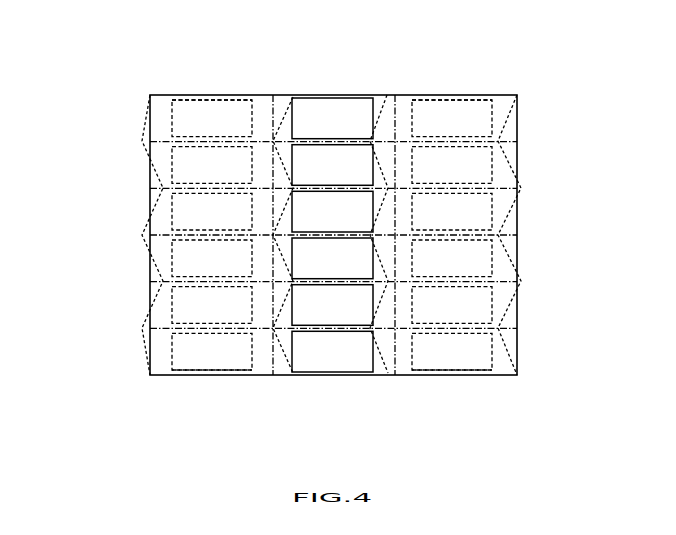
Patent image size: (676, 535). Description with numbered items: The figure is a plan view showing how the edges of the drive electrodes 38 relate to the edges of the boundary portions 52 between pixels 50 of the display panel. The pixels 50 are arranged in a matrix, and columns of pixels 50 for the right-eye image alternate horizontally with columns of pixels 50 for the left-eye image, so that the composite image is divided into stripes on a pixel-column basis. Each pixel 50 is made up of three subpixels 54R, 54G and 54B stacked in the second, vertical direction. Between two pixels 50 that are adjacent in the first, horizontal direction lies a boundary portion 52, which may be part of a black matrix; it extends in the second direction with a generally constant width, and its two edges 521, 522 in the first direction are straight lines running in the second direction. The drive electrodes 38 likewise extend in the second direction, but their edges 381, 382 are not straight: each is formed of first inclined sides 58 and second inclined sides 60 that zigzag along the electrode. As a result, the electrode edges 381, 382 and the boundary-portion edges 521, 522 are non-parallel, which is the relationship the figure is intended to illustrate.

The drive electrode 38 is at (257, 96).
The pixel 50 is at (277, 57).
The boundary portion 52 is at (396, 376).
The subpixel 54R is at (366, 97).
The subpixel 54G is at (333, 137).
The subpixel 54B is at (303, 137).
The first inclined side 58 is at (150, 97).
The second inclined side 60 is at (150, 376).
The edge of drive electrode 381 is at (138, 241).
The edge of drive electrode 382 is at (528, 241).
The edge of boundary portion 521 is at (242, 114).
The edge of boundary portion 522 is at (186, 363).